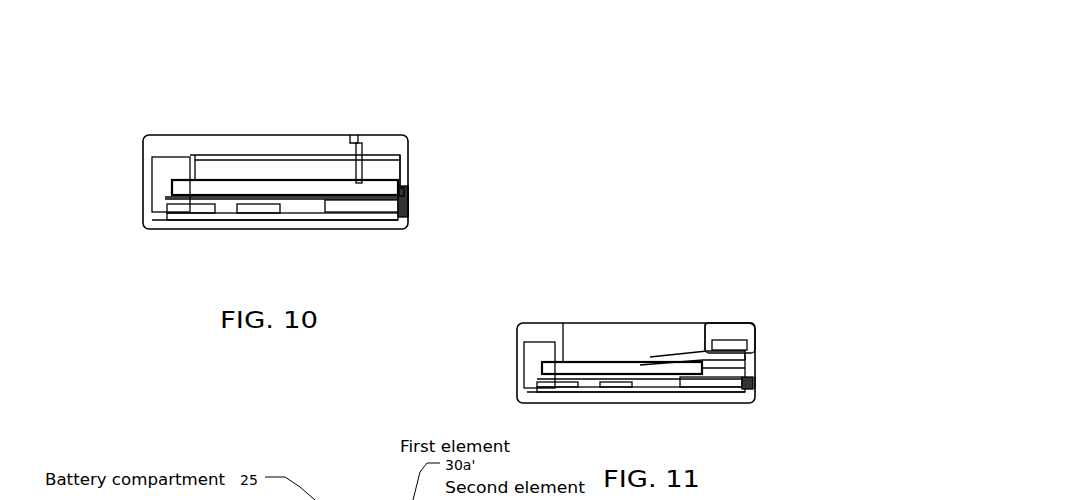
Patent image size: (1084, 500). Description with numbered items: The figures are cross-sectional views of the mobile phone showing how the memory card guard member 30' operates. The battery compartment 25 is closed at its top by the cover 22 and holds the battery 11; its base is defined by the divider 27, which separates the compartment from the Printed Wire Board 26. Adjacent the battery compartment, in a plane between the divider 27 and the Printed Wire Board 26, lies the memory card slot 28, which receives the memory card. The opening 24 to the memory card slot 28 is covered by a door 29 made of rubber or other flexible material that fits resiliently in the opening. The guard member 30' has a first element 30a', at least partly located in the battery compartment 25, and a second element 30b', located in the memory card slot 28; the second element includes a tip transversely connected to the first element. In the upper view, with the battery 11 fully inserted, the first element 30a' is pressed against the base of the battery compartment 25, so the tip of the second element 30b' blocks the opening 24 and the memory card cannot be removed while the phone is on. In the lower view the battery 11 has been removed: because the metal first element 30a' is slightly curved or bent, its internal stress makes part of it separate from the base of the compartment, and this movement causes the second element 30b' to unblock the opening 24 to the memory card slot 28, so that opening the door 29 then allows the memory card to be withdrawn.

In FIG. 10, the battery 11 is at (237, 172).
In FIG. 11, the battery 11 is at (643, 368).
In FIG. 10, the cover 22 is at (232, 137).
In FIG. 10, the opening 24 is at (433, 201).
In FIG. 11, the opening 24 is at (769, 369).
In FIG. 10, the battery compartment 25 is at (315, 160).
In FIG. 11, the battery compartment 25 is at (620, 336).
In FIG. 10, the Printed Wire Board 26 is at (214, 246).
In FIG. 11, the Printed Wire Board 26 is at (577, 417).
In FIG. 10, the divider 27 is at (287, 199).
In FIG. 11, the divider 27 is at (640, 377).
In FIG. 10, the memory card slot 28 is at (405, 187).
In FIG. 10, the door 29 is at (410, 208).
In FIG. 11, the door 29 is at (755, 381).
In FIG. 10, the guard member 30' is at (440, 124).
In FIG. 10, the first element 30a' is at (463, 142).
In FIG. 11, the first element 30a' is at (722, 309).
In FIG. 10, the second element 30b' is at (512, 179).
In FIG. 11, the second element 30b' is at (800, 328).